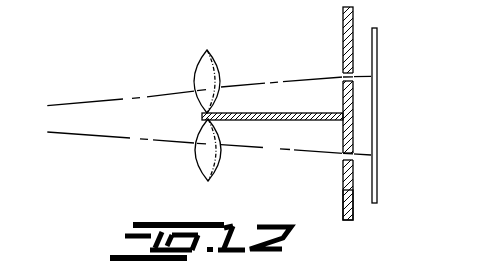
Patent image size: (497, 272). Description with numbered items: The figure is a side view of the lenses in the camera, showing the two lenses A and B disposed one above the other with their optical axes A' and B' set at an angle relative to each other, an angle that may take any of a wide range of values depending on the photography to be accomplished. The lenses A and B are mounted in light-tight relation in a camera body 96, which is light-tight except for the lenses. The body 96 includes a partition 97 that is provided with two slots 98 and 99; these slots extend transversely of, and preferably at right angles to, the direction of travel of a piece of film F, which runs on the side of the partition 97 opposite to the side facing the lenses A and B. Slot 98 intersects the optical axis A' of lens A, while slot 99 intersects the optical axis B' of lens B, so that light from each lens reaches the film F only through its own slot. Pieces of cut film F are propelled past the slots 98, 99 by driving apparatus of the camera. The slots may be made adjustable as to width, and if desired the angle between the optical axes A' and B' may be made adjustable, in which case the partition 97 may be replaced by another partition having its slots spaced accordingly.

The camera body 96 is at (332, 22).
The partition 97 is at (344, 200).
The slot 98 is at (344, 77).
The slot 99 is at (344, 157).
The film F is at (377, 57).
The lens A is at (187, 81).
The lens B is at (192, 150).
The optical axis A' is at (209, 78).
The optical axis B' is at (209, 157).